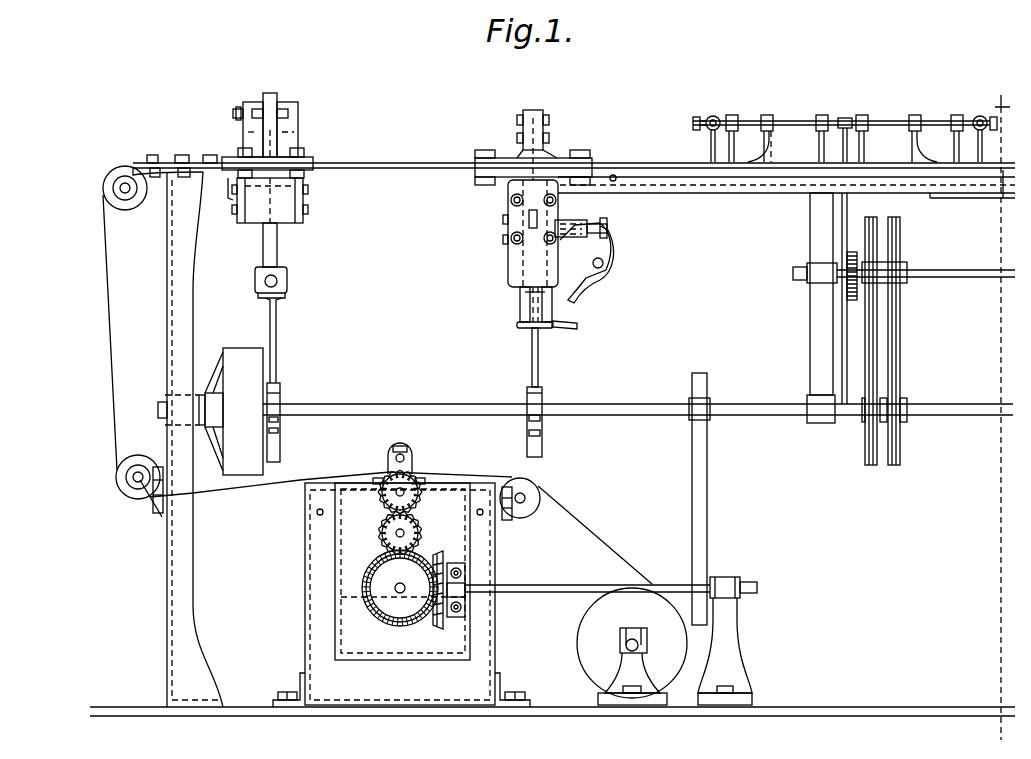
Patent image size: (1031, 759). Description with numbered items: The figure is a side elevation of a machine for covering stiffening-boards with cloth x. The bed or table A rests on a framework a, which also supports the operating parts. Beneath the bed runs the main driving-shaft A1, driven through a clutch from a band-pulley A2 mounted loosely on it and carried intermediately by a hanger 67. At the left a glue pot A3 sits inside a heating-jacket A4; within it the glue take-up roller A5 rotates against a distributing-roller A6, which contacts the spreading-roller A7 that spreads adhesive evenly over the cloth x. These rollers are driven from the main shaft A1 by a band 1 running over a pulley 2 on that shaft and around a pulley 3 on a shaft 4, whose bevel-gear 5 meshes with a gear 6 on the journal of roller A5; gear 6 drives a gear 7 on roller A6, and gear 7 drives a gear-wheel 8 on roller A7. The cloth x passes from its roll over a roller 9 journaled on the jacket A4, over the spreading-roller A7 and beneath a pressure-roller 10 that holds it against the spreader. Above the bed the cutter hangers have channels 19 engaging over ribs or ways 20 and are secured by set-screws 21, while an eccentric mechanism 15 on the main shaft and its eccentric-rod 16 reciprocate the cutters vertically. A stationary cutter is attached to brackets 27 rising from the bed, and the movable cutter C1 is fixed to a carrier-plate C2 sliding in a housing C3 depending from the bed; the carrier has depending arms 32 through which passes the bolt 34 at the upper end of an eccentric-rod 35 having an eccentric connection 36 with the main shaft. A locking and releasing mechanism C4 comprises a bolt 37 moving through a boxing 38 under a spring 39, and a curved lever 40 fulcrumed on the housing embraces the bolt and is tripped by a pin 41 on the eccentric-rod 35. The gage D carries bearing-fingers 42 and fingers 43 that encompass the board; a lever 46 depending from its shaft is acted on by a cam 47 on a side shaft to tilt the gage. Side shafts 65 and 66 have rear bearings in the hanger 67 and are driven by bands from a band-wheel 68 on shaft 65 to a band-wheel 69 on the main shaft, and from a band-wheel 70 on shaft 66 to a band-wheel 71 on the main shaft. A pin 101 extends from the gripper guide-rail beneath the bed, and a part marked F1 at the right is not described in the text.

The framework a is at (197, 300).
The bed or table A is at (452, 152).
The band-wheel 71 is at (135, 215).
The cloth or material x is at (112, 333).
The horizontal channels 19 is at (262, 110).
The set-screws 21 is at (233, 116).
The ribs or ways 20 is at (300, 122).
The eccentric-rod 16 is at (290, 342).
The eccentric mechanism 15 is at (283, 394).
The band-pulley A2 is at (245, 347).
The main driving-shaft A1 is at (638, 400).
The heating-jacket A4 is at (312, 596).
The pressure-roller 10 is at (415, 458).
The gear-wheel 8 is at (423, 498).
The gear 7 is at (376, 540).
The spreading-roller A7 is at (380, 503).
The distributing-roller A6 is at (423, 527).
The gear 6 is at (373, 612).
The glue pot or pan A3 is at (378, 626).
The glue take-up roller A5 is at (400, 626).
The bevel-gear 5 is at (438, 630).
The shaft 4 is at (668, 582).
The roller 9 is at (543, 495).
The brackets 27 is at (533, 108).
The cutter C1 is at (520, 155).
The pin 101 is at (615, 178).
The bracket F1 is at (975, 185).
The housing C3 is at (508, 272).
The carrier-plate C2 is at (512, 200).
The boxing 38 is at (572, 220).
The bolt 37 is at (600, 220).
The locking and releasing mechanism C4 is at (645, 227).
The spring 39 is at (612, 240).
The lever 40 is at (594, 288).
The depending arms 32 is at (521, 305).
The bolt 34 is at (520, 296).
The pin 41 is at (577, 328).
The eccentric-rod 35 is at (539, 365).
The eccentric connection 36 is at (543, 437).
The gage D is at (841, 131).
The bearing-fingers 42 is at (744, 150).
The fingers 43 is at (708, 140).
The lever 46 is at (822, 232).
The hanger 67 is at (810, 348).
The cam 47 is at (852, 300).
The side shaft 66 is at (905, 265).
The side shaft 65 is at (981, 257).
The band-wheel 70 is at (868, 217).
The band-wheel 68 is at (902, 226).
The band-wheel 69 is at (900, 362).
The pulley 2 is at (707, 433).
The band 1 is at (700, 505).
The pulley 3 is at (708, 556).